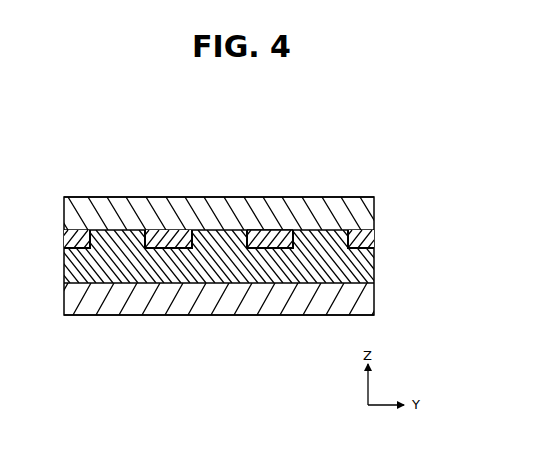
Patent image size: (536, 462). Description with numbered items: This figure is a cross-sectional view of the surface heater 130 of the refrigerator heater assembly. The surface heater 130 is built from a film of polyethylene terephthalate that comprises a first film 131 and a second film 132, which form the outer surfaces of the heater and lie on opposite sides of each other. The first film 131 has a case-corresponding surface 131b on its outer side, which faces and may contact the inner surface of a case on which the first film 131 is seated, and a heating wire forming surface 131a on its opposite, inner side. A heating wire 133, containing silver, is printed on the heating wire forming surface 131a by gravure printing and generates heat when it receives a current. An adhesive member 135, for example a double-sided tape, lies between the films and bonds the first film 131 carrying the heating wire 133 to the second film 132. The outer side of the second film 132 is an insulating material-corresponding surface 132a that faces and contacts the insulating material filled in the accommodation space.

The surface heater 130 is at (157, 150).
The first film 131 is at (345, 218).
The heating wire forming surface 131a is at (280, 229).
The case-corresponding surface 131b is at (318, 197).
The second film 132 is at (356, 303).
The insulating material-corresponding surface 132a is at (318, 315).
The heating wire 133 is at (355, 237).
The adhesive member 135 is at (352, 267).